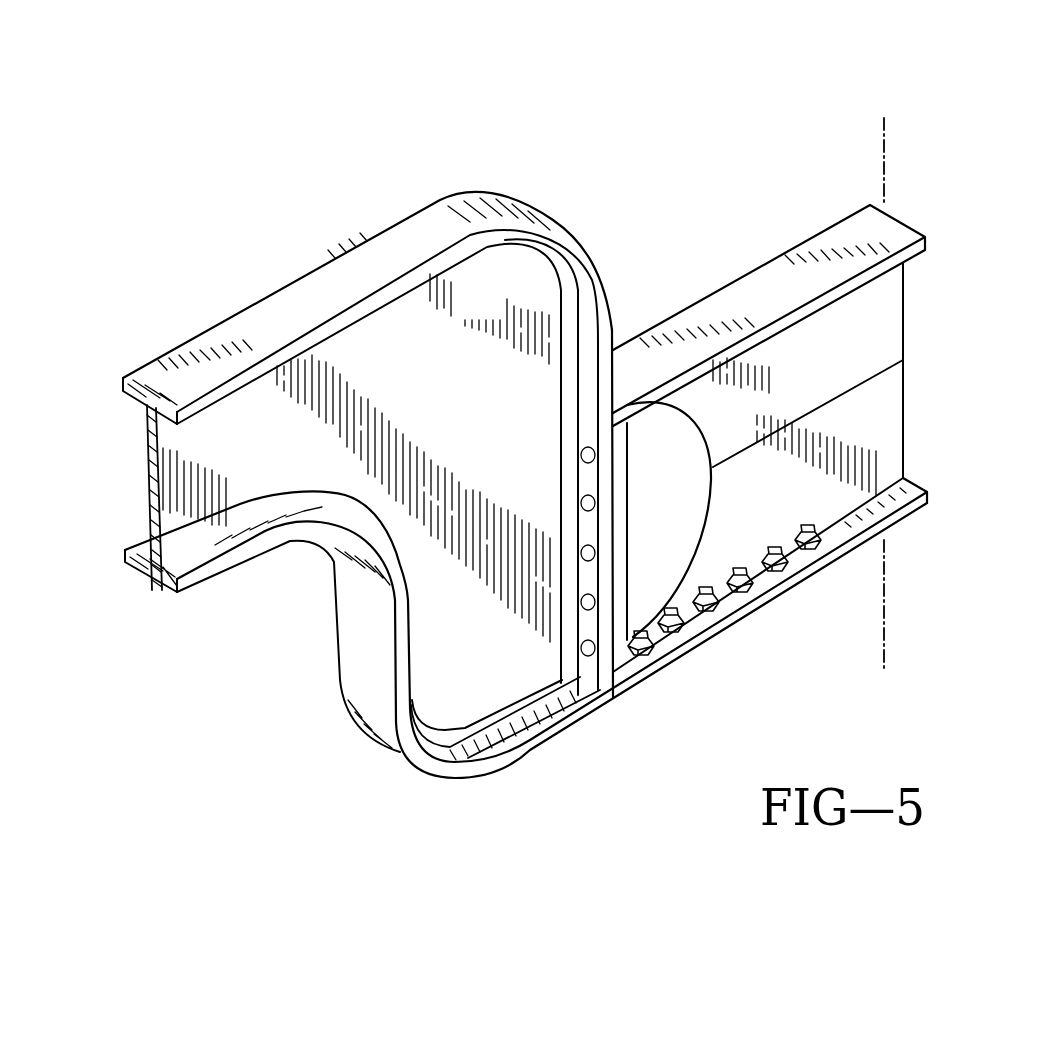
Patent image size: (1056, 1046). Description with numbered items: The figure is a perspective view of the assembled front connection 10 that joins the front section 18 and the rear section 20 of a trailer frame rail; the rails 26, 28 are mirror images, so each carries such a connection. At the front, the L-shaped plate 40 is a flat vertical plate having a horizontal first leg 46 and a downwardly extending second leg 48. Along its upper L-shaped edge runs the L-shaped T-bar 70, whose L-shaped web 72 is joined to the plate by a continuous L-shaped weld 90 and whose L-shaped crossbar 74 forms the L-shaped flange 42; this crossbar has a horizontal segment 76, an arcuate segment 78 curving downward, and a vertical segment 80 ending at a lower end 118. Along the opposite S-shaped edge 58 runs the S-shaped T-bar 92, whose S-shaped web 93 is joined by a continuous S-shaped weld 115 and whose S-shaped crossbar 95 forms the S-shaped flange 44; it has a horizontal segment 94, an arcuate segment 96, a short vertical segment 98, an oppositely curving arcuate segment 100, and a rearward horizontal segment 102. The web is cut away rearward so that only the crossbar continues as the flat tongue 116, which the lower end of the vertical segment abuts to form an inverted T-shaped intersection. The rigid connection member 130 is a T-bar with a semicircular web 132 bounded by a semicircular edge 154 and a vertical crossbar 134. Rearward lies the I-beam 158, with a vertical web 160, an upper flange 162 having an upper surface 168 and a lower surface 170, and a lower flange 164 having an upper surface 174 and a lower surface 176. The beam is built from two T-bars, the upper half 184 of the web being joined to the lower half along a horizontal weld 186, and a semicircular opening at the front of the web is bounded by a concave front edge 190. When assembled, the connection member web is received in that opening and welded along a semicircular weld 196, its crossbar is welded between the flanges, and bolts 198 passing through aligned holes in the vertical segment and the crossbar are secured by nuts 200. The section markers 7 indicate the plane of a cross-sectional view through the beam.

The section line 7- 7 is at (884, 118).
The front connection 10 is at (632, 247).
The front section 18 is at (517, 486).
The rear section 20 is at (822, 460).
The first rail 26 is at (98, 647).
The second rail 28 is at (127, 596).
The L-shaped plate 40 is at (438, 404).
The L-shaped flange 42 is at (380, 243).
The S-shaped flange 44 is at (340, 687).
The first leg 46 is at (205, 455).
The second leg 48 is at (507, 657).
The S-shaped edge 58 is at (253, 500).
The L-shaped T-bar 70 is at (183, 340).
The L-shaped web 72 is at (145, 412).
The L-shaped crossbar 74 is at (123, 381).
The horizontal segment 76 is at (248, 320).
The arcuate segment 78 is at (568, 238).
The vertical segment 80 is at (607, 387).
The L-shaped continuous weld 90 is at (545, 277).
The S-shaped T-bar 92 is at (204, 597).
The S-shaped web 93 is at (175, 540).
The horizontal segment 94 is at (243, 568).
The S-shaped crossbar 95 is at (125, 558).
The arcuate segment 96 is at (367, 557).
The short vertical segment 98 is at (411, 633).
The arcuate segment 100 is at (438, 775).
The horizontal segment 102 is at (563, 733).
The S-shaped weld 115 is at (458, 726).
The tongue 116 is at (750, 622).
The lower end 118 is at (590, 722).
The connection member 130 is at (638, 443).
The web 132 is at (640, 412).
The crossbar 134 is at (617, 527).
The semicircular edge 154 is at (702, 418).
The beam 158 is at (906, 390).
The web 160 is at (877, 430).
The upper flange 162 is at (860, 226).
The lower flange 164 is at (930, 500).
The upper surface 168 is at (902, 236).
The lower surface 170 is at (913, 257).
The upper surface 174 is at (917, 481).
The lower surface 176 is at (926, 508).
The upper half 184 is at (808, 355).
The weld 186 is at (862, 382).
The front edge 190 is at (700, 446).
The semicircular weld 196 is at (713, 485).
The bolts 198 is at (580, 503).
The nuts 200 is at (708, 615).